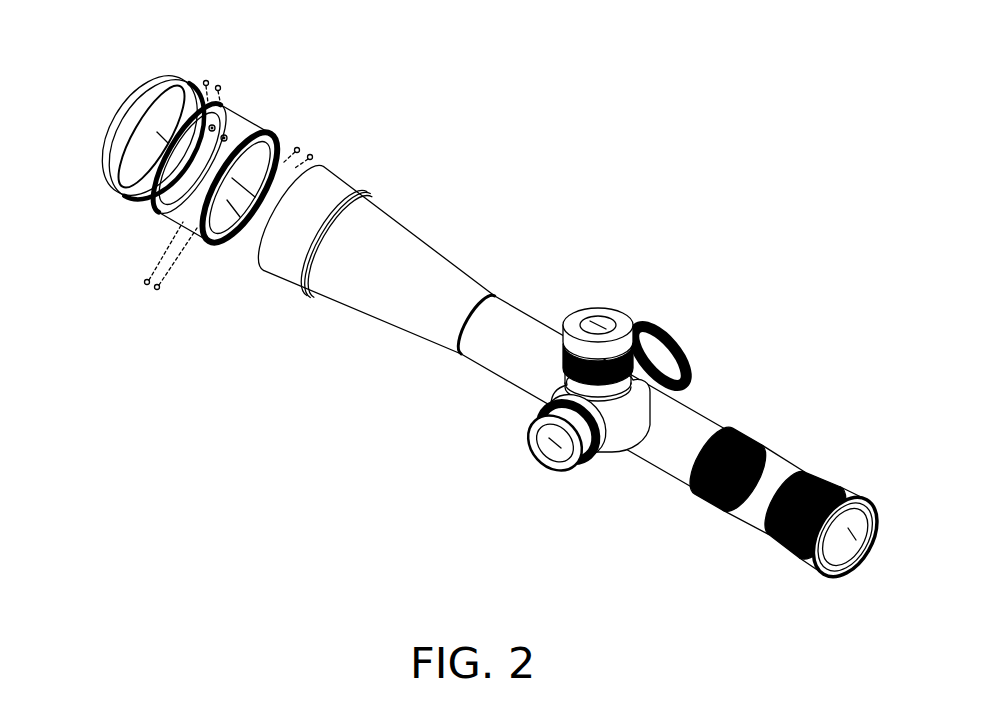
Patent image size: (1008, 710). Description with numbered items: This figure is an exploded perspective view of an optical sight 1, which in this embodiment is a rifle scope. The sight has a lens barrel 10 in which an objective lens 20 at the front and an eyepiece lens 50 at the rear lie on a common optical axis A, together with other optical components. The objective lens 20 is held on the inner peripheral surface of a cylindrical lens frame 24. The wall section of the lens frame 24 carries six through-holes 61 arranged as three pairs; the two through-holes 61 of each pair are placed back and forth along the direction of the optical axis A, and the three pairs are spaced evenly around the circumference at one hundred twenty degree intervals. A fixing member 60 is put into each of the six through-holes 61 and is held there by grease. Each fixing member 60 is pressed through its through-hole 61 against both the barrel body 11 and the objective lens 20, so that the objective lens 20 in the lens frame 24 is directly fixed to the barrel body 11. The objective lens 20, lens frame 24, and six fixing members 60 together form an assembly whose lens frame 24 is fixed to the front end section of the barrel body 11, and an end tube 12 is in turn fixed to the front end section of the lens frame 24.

The optical sight 1 is at (494, 235).
The lens barrel 10 is at (56, 262).
The barrel body 11 is at (337, 305).
The end tube 12 is at (112, 195).
The objective lens 20 is at (256, 200).
The lens frame 24 is at (157, 202).
The eyepiece lens 50 is at (848, 540).
The fixing member 60 is at (203, 81).
The through-hole 61 is at (214, 126).
The optical axis A is at (242, 202).